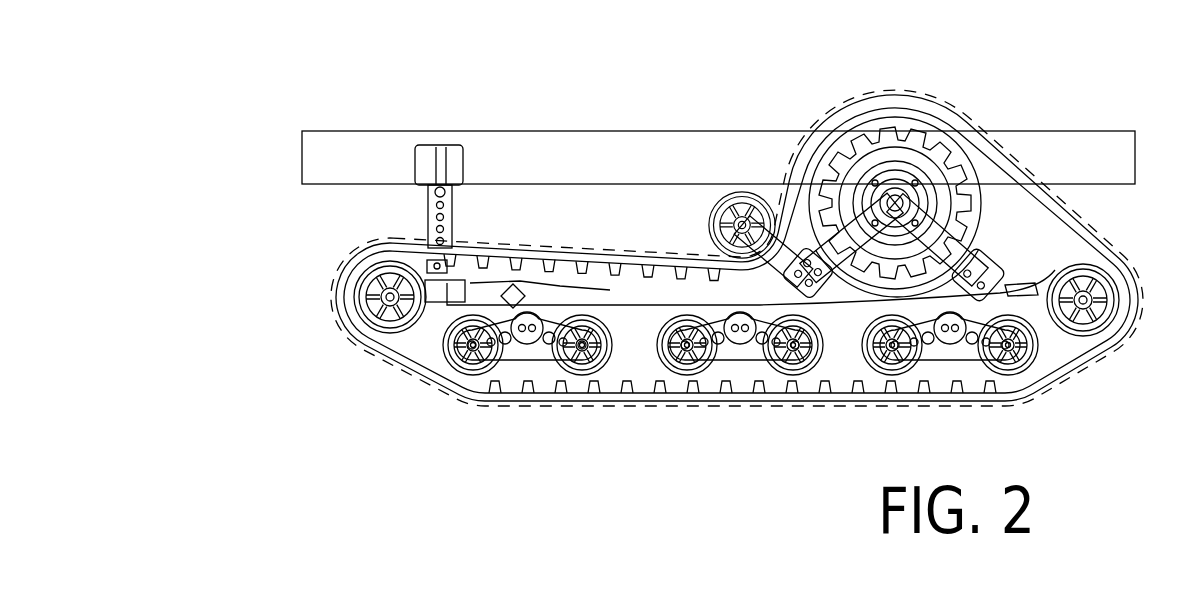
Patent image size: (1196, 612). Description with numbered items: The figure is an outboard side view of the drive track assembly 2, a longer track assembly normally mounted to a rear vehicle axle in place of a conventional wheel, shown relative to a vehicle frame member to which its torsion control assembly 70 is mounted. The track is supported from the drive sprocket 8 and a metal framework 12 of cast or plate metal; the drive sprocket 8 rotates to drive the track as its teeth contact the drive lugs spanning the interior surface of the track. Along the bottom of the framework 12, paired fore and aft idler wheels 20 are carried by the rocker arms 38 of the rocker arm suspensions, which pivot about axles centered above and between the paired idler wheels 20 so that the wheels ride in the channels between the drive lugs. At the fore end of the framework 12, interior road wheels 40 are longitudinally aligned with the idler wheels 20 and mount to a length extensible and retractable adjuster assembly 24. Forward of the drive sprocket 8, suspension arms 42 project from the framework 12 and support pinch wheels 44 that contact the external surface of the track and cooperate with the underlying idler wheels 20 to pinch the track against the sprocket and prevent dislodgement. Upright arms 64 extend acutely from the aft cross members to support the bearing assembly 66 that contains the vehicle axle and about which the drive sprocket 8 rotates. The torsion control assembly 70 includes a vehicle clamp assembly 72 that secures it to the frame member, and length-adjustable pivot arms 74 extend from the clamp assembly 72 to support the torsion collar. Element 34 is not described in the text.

The drive track assembly 2 is at (272, 313).
The drive sprocket 8 is at (1063, 242).
The framework 12 is at (625, 323).
The idler wheels 20 is at (500, 372).
The adjuster assembly 24 is at (447, 293).
The bogie arm 34 is at (517, 350).
The rocker arms 38 is at (530, 340).
The road wheels 40 is at (388, 320).
The suspension arms 42 is at (773, 237).
The pinch wheels 44 is at (707, 210).
The upright arms 64 is at (903, 223).
The bearing assembly 66 is at (890, 200).
The torsion control assembly 70 is at (687, 137).
The vehicle clamp assembly 72 is at (434, 152).
The pivot arms 74 is at (432, 222).